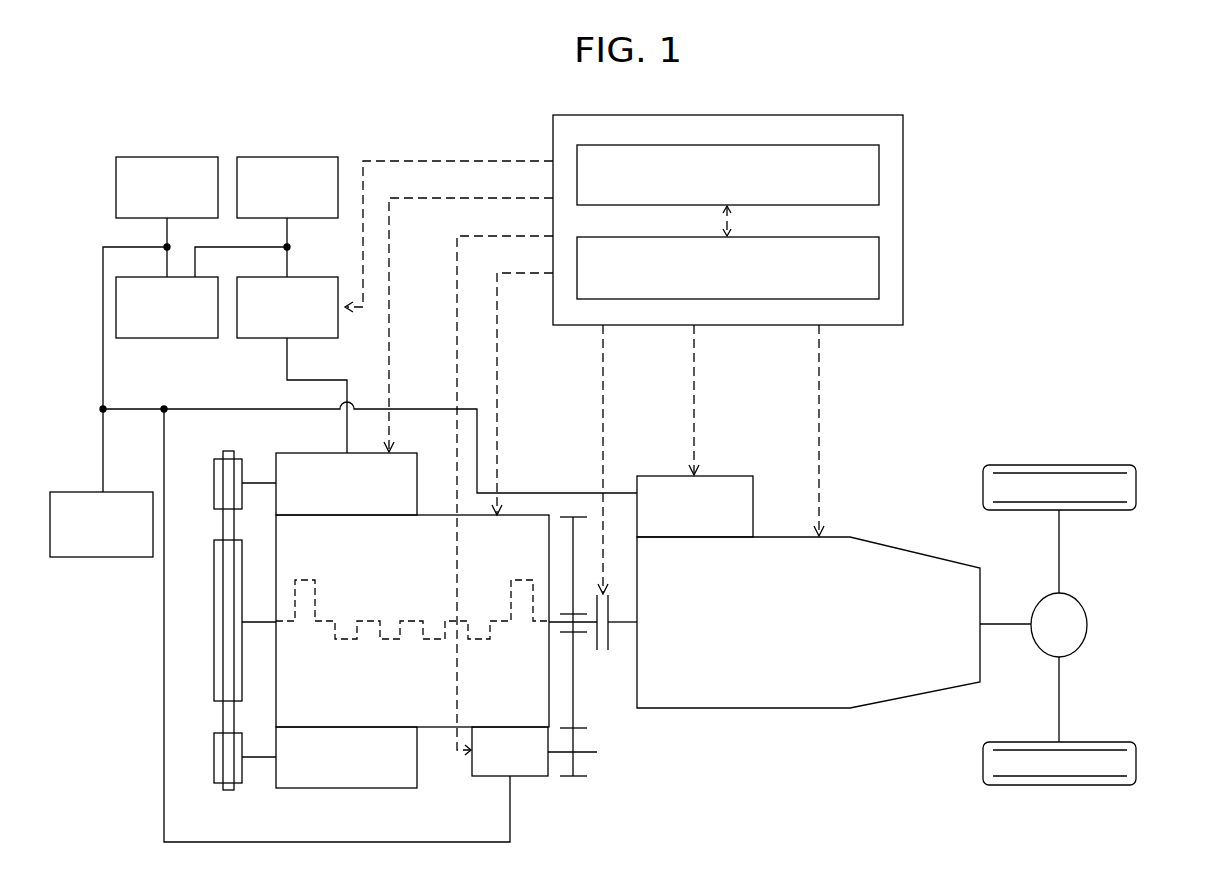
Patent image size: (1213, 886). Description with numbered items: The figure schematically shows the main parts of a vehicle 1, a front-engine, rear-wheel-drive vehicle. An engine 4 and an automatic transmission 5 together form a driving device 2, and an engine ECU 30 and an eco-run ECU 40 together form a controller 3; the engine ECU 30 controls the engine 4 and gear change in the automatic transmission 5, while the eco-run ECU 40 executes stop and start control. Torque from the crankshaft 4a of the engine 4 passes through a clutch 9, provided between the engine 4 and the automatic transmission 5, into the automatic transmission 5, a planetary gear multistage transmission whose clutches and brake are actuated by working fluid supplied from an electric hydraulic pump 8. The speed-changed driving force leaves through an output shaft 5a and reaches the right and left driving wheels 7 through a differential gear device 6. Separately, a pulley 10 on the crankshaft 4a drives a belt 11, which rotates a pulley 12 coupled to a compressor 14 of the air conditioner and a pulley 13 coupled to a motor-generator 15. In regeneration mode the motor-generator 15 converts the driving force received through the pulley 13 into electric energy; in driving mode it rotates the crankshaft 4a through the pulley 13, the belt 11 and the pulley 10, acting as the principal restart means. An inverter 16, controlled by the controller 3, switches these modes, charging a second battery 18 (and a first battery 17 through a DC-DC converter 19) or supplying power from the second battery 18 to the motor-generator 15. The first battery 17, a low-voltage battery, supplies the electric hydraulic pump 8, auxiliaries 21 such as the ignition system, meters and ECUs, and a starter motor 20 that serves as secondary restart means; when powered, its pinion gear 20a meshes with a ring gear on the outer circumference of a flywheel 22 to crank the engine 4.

The vehicle 1 is at (1012, 236).
The driving device 2 is at (650, 758).
The controller 3 is at (855, 117).
The engine 4 is at (435, 727).
The crankshaft 4a is at (368, 620).
The automatic transmission 5 is at (788, 708).
The output shaft 5a is at (1000, 627).
The differential gear device 6 is at (1077, 614).
The driving wheels 7 is at (1125, 487).
The electric hydraulic pump 8 is at (752, 492).
The clutch 9 is at (604, 655).
The pulley 10 is at (217, 605).
The belt 11 is at (225, 712).
The pulley 12 is at (216, 762).
The pulley 13 is at (216, 478).
The compressor 14 is at (276, 783).
The motor-generator 15 is at (318, 453).
The inverter 16 is at (255, 338).
The first battery 17 is at (175, 157).
The second battery 18 is at (290, 157).
The DC-DC converter 19 is at (160, 338).
The starter motor 20 is at (527, 776).
The pinion gear 20a is at (580, 764).
The auxiliaries 21 is at (100, 557).
The flywheel 22 is at (573, 545).
The engine ECU 30 is at (879, 173).
The eco-run ECU 40 is at (879, 272).